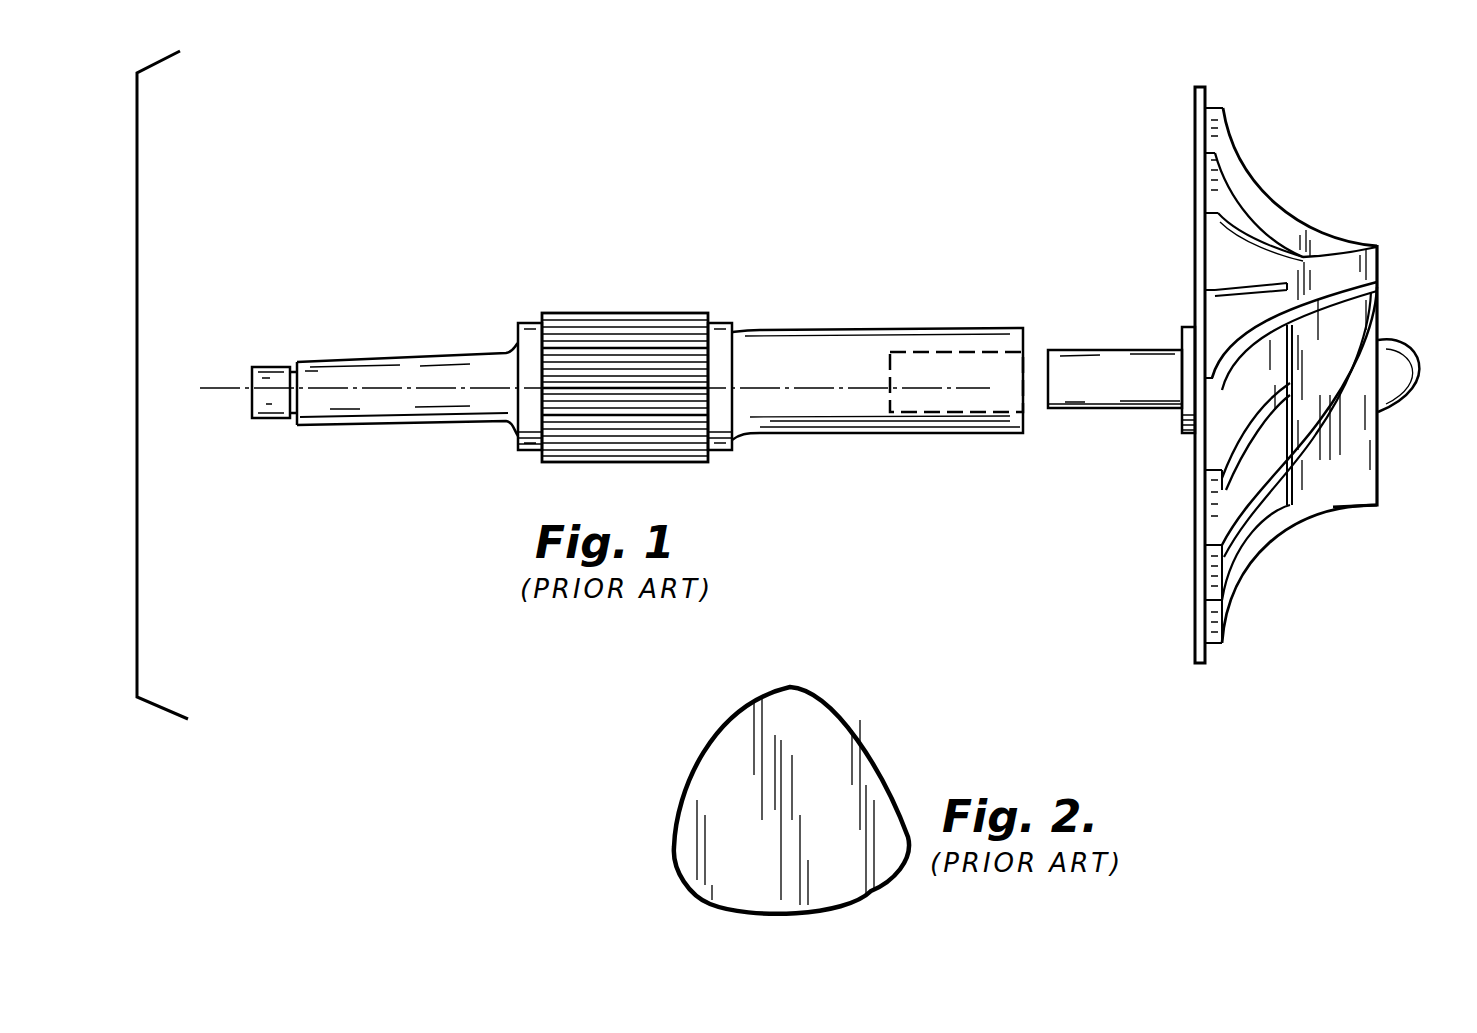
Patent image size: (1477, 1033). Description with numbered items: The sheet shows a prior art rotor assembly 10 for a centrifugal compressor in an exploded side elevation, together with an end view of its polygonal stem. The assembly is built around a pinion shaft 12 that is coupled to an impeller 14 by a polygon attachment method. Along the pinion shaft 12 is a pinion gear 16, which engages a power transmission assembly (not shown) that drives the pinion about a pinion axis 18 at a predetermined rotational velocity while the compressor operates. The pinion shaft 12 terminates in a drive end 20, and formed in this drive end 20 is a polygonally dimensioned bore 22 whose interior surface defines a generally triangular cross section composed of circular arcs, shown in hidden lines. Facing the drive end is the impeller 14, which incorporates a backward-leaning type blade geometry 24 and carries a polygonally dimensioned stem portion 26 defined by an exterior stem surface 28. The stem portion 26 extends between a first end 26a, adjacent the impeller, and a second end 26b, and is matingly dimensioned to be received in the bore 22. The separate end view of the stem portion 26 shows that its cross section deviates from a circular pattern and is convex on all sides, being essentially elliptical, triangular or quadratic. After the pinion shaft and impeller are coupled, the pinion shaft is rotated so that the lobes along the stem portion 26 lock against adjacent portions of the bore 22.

In FIG. 1, the prior art motor rotor assembly 10 is at (871, 199).
In FIG. 1, the pinion shaft 12 is at (791, 316).
In FIG. 1, the impeller 14 is at (1366, 236).
In FIG. 1, the pinion gear 16 is at (632, 326).
In FIG. 1, the pinion axis 18 is at (227, 382).
In FIG. 1, the drive end 20 is at (976, 330).
In FIG. 1, the polygonally dimensioned bore 22 is at (972, 405).
In FIG. 1, the blade geometry 24 is at (1277, 488).
In FIG. 1, the stem portion 26 is at (1071, 356).
In FIG. 2, the stem portion 26 is at (697, 769).
In FIG. 1, the first end 26a is at (1165, 346).
In FIG. 1, the second end 26b is at (1058, 410).
In FIG. 2, the exterior stem surface 28 is at (869, 731).